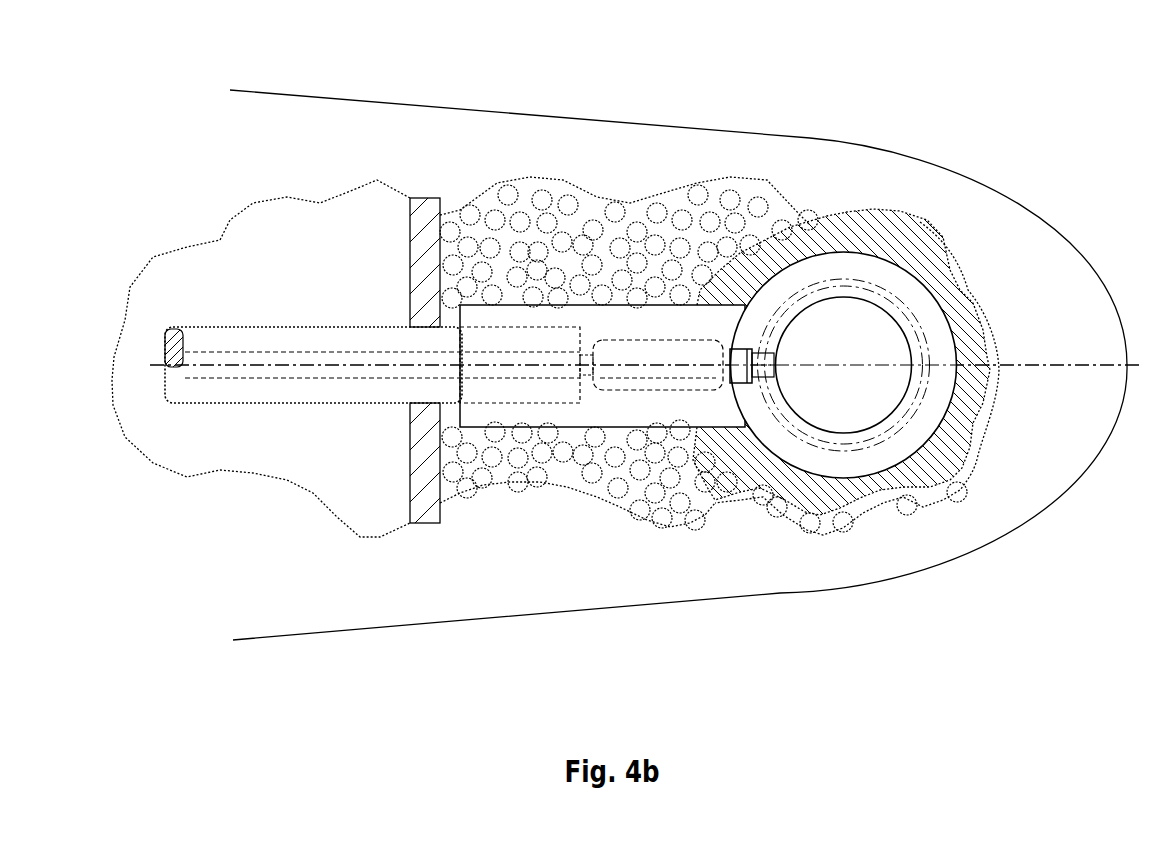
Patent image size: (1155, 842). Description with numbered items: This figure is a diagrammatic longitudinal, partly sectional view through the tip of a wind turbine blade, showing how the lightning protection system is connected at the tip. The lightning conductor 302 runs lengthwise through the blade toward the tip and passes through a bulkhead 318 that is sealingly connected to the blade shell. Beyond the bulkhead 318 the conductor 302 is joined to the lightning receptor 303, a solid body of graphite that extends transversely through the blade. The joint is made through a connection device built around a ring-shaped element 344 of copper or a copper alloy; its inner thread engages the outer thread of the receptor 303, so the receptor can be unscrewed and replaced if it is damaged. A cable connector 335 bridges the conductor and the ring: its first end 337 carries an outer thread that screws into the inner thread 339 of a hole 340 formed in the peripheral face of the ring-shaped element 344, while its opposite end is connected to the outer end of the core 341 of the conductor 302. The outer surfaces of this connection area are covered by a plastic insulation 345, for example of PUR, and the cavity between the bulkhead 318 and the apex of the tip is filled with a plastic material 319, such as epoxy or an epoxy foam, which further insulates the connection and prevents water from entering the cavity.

The lightning conductor 302 is at (333, 370).
The lightning receptor 303 is at (910, 405).
The bulkhead 318 is at (433, 212).
The plastic material 319 is at (552, 192).
The cable connector 335 is at (640, 392).
The first end of cable connector 337 is at (735, 385).
The inner thread in hole 339 is at (778, 363).
The hole 340 is at (857, 403).
The core of the conductor 341 is at (590, 377).
The ring-shaped element 344 is at (953, 487).
The plastic insulation 345 is at (648, 322).